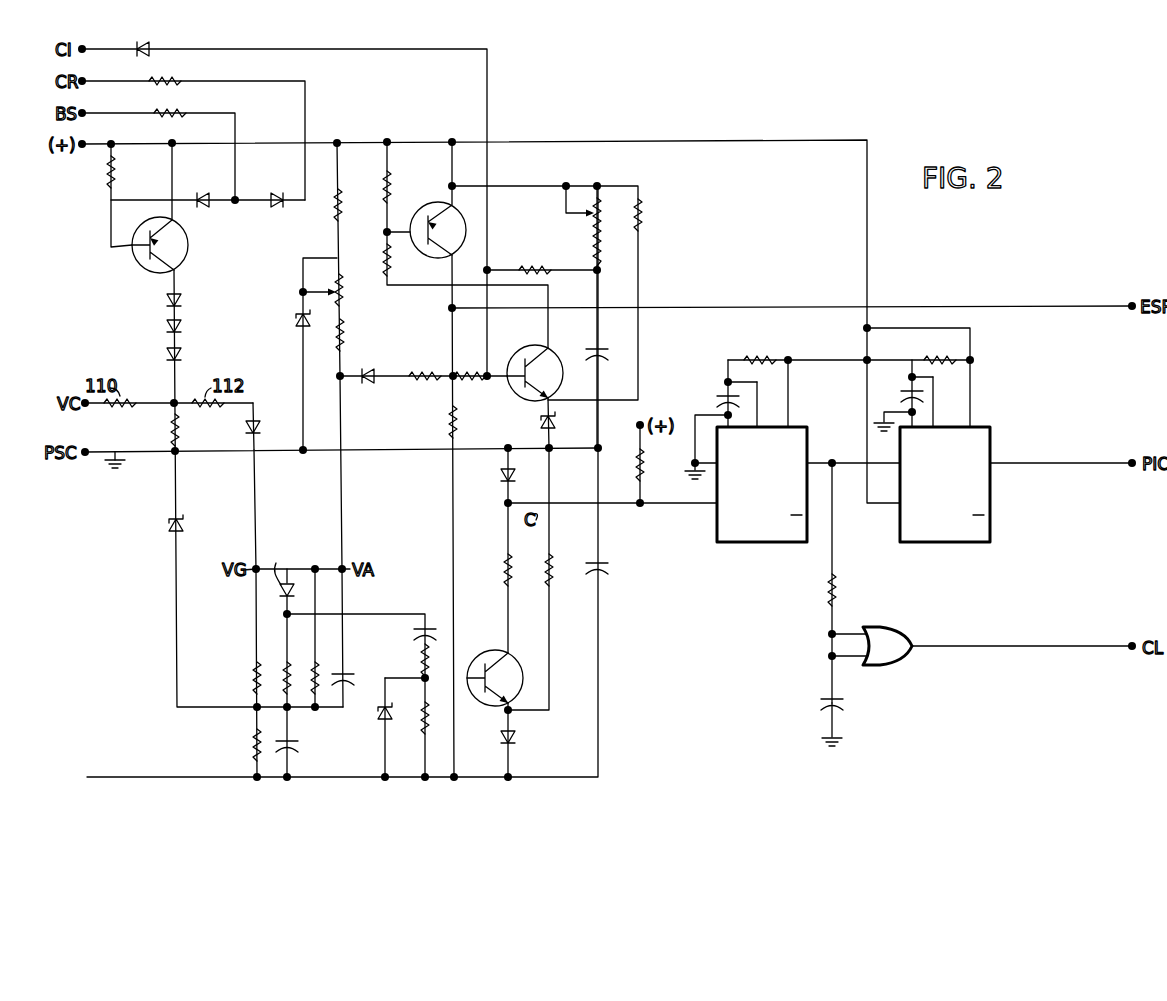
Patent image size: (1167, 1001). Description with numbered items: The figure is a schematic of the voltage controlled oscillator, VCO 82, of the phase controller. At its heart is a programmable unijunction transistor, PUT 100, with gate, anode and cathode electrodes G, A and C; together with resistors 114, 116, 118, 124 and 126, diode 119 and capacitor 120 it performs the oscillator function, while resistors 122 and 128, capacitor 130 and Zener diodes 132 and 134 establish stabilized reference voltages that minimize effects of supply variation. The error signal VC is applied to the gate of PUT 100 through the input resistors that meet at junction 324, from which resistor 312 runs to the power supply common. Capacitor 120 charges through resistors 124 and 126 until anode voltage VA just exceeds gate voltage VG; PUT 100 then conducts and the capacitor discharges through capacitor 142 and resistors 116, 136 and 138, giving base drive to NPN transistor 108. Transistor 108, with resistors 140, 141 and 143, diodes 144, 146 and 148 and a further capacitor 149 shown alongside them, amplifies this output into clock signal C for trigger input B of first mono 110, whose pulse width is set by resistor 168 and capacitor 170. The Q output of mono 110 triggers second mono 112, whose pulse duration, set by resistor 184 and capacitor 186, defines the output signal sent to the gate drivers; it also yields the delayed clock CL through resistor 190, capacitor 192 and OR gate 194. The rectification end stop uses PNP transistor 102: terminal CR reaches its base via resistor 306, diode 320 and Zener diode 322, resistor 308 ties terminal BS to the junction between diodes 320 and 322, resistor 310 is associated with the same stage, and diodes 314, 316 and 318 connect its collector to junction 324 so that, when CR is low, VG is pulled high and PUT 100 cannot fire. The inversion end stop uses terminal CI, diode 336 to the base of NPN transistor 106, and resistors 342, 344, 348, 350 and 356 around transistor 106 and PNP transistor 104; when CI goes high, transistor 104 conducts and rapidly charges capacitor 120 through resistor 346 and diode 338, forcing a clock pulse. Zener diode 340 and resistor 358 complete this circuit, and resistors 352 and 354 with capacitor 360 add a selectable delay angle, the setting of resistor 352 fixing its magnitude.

The VCO 82 is at (683, 772).
The programmable unijunction transistor 100 is at (282, 583).
The PNP transistor 102 is at (186, 262).
The PNP transistor 104 is at (431, 268).
The NPN transistor 106 is at (532, 345).
The NPN transistor 108 is at (520, 668).
The first mono 110 is at (737, 542).
The second mono 112 is at (950, 542).
The resistor 114 is at (310, 674).
The resistor 116 is at (281, 674).
The resistor 118 is at (252, 675).
The diode 119 is at (262, 425).
The capacitor 120 is at (356, 684).
The resistor 122 is at (334, 214).
The resistor 124 is at (343, 296).
The resistor 126 is at (343, 329).
The resistor 128 is at (251, 745).
The capacitor 130 is at (294, 752).
The Zener diode 132 is at (184, 528).
The Zener diode 134 is at (296, 324).
The resistor 136 is at (420, 660).
The resistor 138 is at (420, 730).
The resistor 140 is at (503, 574).
The resistor 141 is at (545, 574).
The capacitor 142 is at (412, 632).
The resistor 143 is at (644, 470).
The diode 144 is at (377, 718).
The diode 146 is at (499, 476).
The diode 148 is at (516, 740).
The capacitor 149 is at (610, 571).
The resistor 168 is at (744, 356).
The capacitor 170 is at (715, 396).
The resistor 184 is at (933, 356).
The capacitor 186 is at (900, 393).
The resistor 190 is at (824, 592).
The capacitor 192 is at (818, 706).
The OR gate 194 is at (893, 662).
The resistor 306 is at (170, 78).
The resistor 308 is at (174, 110).
The resistor 310 is at (108, 175).
The resistor 312 is at (170, 427).
The diode 314 is at (182, 306).
The diode 316 is at (182, 332).
The diode 318 is at (182, 360).
The diode 320 is at (278, 214).
The Zener diode 322 is at (199, 196).
The junction 324 is at (176, 403).
The diode 336 is at (141, 44).
The diode 338 is at (365, 368).
The Zener diode 340 is at (560, 426).
The resistor 342 is at (388, 178).
The resistor 344 is at (385, 260).
The resistor 346 is at (405, 368).
The resistor 348 is at (473, 364).
The resistor 350 is at (458, 426).
The resistor 352 is at (594, 226).
The resistor 354 is at (591, 261).
The resistor 356 is at (643, 214).
The resistor 358 is at (532, 268).
The capacitor 360 is at (615, 358).